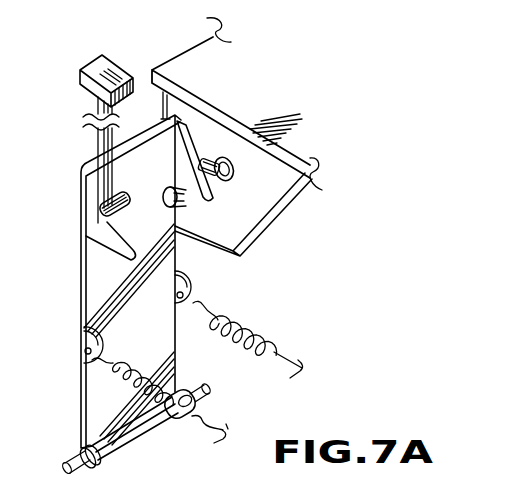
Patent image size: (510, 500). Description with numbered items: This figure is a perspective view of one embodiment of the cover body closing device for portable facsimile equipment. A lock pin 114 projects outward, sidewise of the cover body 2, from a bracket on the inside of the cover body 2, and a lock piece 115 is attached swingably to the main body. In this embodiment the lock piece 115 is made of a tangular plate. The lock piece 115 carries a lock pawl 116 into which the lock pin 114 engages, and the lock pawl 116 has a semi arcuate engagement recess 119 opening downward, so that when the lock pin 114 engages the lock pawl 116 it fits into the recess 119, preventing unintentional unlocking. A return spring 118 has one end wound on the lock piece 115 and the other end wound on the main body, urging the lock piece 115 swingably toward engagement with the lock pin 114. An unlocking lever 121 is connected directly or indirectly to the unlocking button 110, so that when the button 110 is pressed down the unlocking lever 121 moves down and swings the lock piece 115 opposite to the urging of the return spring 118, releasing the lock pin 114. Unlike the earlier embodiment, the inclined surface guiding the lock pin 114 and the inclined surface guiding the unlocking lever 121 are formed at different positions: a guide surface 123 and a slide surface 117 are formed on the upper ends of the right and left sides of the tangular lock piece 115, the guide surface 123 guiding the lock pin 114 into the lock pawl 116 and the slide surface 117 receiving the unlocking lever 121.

The cover body 2 is at (187, 57).
The unlocking button 110 is at (116, 63).
The lock pin 114 is at (229, 174).
The lock piece 115 is at (96, 298).
The lock pawl 116 is at (209, 200).
The slide surface 117 is at (104, 236).
The return spring 118 is at (145, 383).
The engagement recess 119 is at (198, 178).
The unlocking lever 121 is at (127, 196).
The guide surface 123 is at (200, 180).